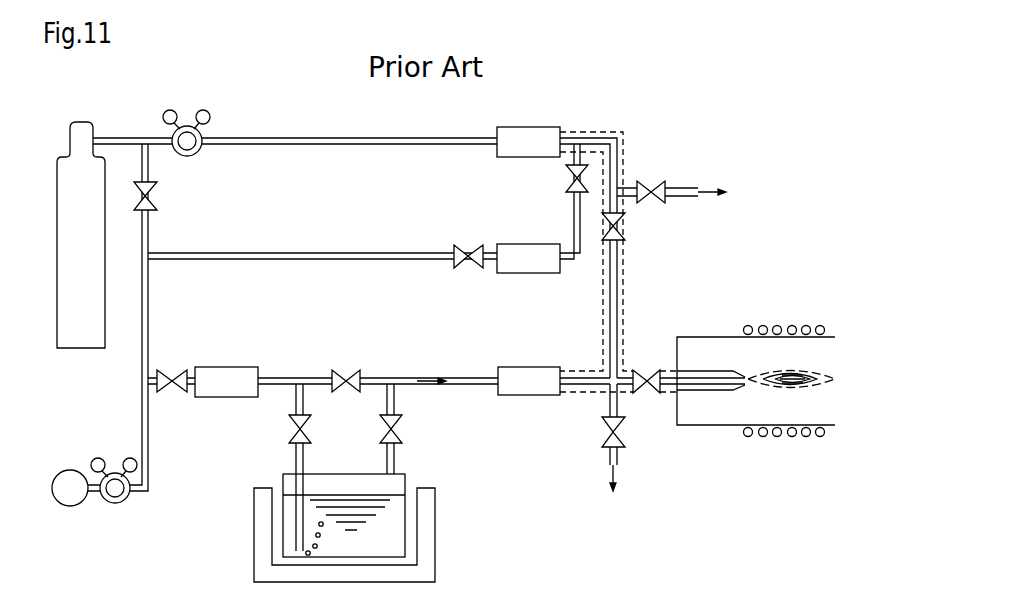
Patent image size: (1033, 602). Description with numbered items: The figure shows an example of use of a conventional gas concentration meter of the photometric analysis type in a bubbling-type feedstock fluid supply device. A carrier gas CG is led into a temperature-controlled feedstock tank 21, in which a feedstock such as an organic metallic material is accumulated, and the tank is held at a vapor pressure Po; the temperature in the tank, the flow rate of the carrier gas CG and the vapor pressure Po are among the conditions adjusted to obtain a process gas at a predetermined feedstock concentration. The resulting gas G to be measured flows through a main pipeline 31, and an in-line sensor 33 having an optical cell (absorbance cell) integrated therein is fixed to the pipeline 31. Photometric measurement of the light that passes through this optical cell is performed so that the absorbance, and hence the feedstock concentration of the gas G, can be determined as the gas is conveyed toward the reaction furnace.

The main pipeline 31 is at (467, 377).
The in-line sensor 33 is at (527, 380).
The feedstock tank 21 is at (405, 520).
The gas to be measured G is at (428, 374).
The carrier gas CG is at (289, 466).
The vapor pressure Po is at (392, 486).